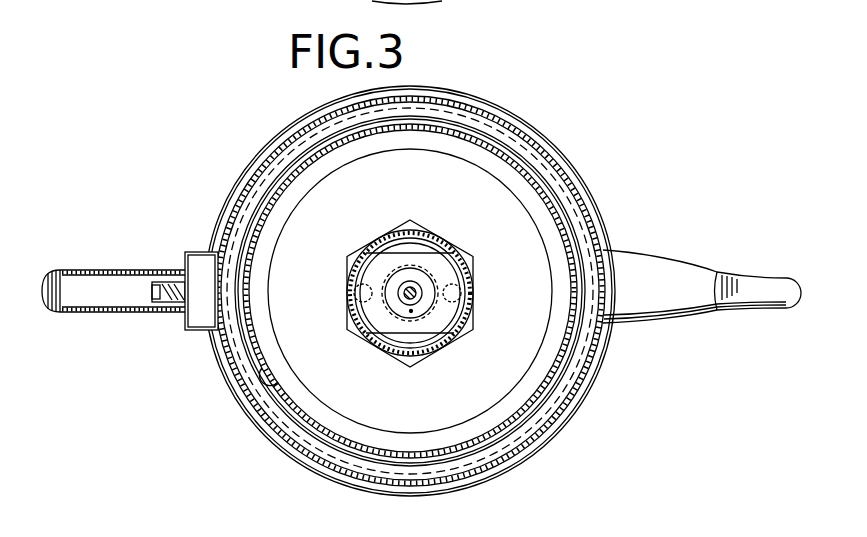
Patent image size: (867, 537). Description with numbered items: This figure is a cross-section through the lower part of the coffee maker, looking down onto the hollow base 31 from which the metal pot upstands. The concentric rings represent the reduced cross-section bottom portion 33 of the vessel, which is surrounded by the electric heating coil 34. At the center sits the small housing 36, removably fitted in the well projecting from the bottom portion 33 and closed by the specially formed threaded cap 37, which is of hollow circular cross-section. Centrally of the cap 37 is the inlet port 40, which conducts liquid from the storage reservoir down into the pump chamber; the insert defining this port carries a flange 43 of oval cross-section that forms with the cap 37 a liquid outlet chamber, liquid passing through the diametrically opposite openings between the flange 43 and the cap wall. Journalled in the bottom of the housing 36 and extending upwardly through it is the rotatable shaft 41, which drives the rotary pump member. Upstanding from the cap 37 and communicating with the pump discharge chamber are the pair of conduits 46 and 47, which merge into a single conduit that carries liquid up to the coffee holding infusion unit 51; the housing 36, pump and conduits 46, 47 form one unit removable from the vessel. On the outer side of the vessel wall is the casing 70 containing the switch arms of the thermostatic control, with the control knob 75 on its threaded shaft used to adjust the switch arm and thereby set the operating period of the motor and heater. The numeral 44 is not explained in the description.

The hollow base 31 is at (560, 178).
The bottom portion 33 is at (272, 369).
The electric heating coil 34 is at (547, 400).
The housing 36 is at (453, 262).
The threaded cap 37 is at (412, 228).
The inlet port 40 is at (411, 312).
The rotatable shaft 41 is at (402, 295).
The flange 43 is at (433, 320).
The threaded collar 44 is at (418, 250).
The conduit 46 is at (357, 304).
The conduit 47 is at (452, 306).
The coffee holding infusion unit 51 is at (288, 333).
The casing 70 is at (200, 262).
The control knob 75 is at (175, 297).